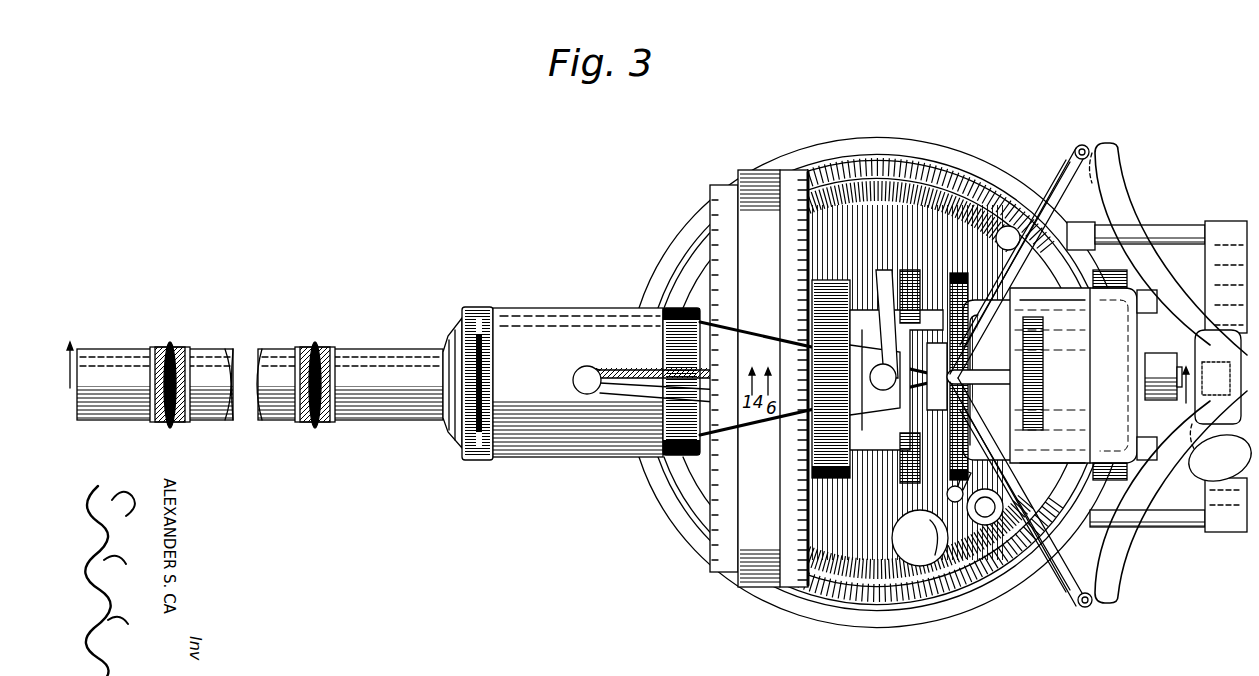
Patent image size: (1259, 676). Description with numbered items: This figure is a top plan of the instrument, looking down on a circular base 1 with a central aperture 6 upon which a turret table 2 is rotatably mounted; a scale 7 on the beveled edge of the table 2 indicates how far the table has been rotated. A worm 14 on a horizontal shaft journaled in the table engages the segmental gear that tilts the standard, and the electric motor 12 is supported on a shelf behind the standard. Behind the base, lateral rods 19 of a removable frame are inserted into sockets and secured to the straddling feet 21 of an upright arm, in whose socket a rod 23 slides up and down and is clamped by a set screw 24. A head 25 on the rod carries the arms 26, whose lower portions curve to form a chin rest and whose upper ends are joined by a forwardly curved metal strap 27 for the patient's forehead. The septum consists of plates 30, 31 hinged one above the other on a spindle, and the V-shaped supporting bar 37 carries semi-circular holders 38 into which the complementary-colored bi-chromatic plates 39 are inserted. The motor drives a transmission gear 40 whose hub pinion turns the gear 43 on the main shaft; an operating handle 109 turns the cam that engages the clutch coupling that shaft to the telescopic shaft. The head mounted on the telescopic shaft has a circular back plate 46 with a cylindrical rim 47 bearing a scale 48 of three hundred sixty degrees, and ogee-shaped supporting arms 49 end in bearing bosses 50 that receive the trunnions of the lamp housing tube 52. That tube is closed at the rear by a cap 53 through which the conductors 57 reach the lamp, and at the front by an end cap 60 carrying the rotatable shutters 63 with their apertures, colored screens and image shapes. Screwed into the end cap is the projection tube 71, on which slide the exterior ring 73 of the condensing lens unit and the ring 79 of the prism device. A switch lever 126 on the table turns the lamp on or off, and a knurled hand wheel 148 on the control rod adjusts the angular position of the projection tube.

The circular base 1 is at (884, 620).
The table 2 is at (890, 566).
The scale 7 is at (955, 580).
The aperture 6 is at (1203, 389).
The electric motor 12 is at (1083, 375).
The worm 14 is at (84, 356).
The lateral rods 19 is at (1170, 228).
The straddling feet 21 is at (1214, 262).
The rod 23 is at (1192, 416).
The set screw 24 is at (1210, 462).
The head 25 is at (1198, 338).
The arms 26 is at (1118, 170).
The metal strap 27 is at (1093, 192).
The septum plate 30 is at (750, 334).
The septum plate 31 is at (748, 436).
The supporting bar 37 is at (1078, 146).
The metal holders 38 is at (1086, 148).
The bi-chromatic plates 39 is at (1065, 166).
The transmission gear 40 is at (903, 492).
The gear 43 is at (954, 492).
The circular back plate 46 is at (820, 575).
The cylindrical rim 47 is at (768, 586).
The scale 48 is at (800, 588).
The supporting arms 49 is at (632, 398).
The bearing bosses 50 is at (585, 394).
The tube 52 is at (540, 316).
The cap 53 is at (684, 450).
The conductors 57 is at (621, 364).
The end cap 60 is at (455, 325).
The shutters 63 is at (485, 306).
The projection tube 71 is at (120, 352).
The exterior ring 73 is at (170, 345).
The ring 79 is at (314, 345).
The operating handle 109 is at (890, 308).
The switch lever 126 is at (982, 522).
The knurled hand wheel 148 is at (1040, 378).